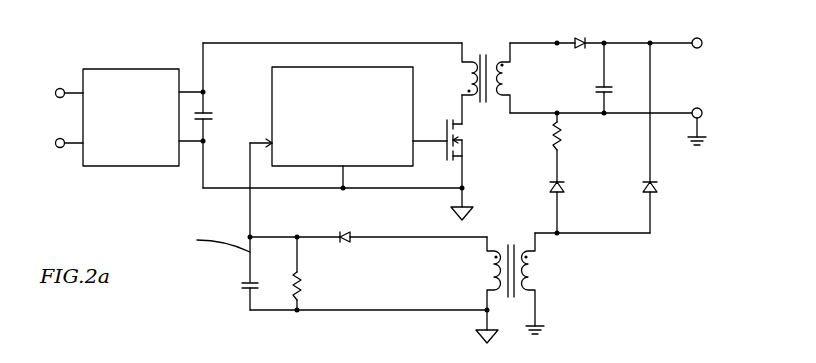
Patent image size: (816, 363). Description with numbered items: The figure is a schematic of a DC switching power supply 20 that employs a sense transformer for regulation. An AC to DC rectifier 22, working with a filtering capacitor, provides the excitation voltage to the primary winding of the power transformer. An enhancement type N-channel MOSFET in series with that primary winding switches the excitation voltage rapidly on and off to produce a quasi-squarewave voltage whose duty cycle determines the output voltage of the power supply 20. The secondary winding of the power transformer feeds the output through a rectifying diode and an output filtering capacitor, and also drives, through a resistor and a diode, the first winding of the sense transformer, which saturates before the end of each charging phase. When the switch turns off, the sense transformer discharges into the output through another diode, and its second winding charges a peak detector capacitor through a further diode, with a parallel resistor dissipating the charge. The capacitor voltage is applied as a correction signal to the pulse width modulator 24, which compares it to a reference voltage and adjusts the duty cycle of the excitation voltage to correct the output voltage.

The power supply 20 is at (454, 42).
The AC to DC rectifier 22 is at (131, 117).
The pulse width modulator 24 is at (342, 116).